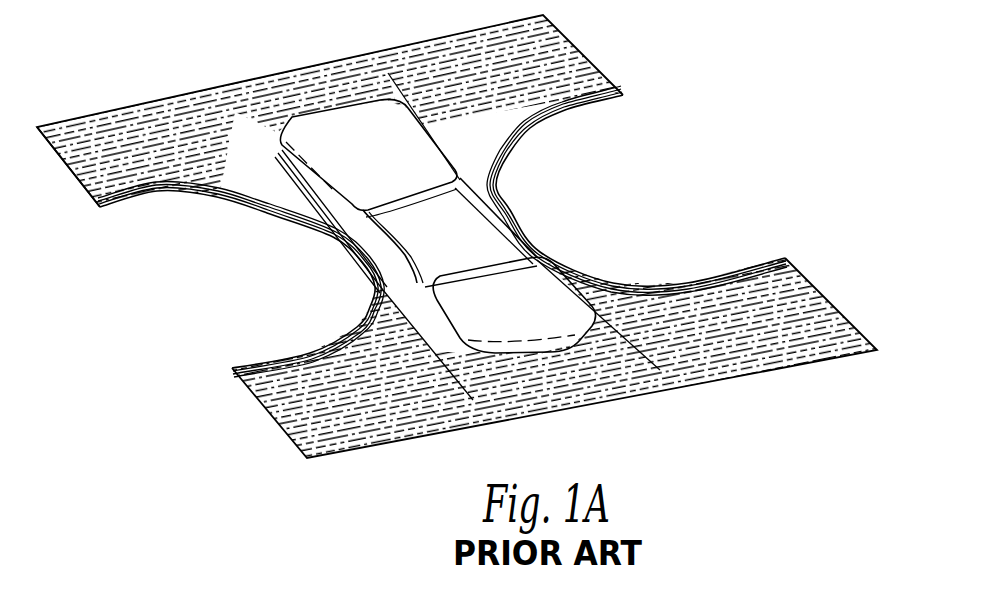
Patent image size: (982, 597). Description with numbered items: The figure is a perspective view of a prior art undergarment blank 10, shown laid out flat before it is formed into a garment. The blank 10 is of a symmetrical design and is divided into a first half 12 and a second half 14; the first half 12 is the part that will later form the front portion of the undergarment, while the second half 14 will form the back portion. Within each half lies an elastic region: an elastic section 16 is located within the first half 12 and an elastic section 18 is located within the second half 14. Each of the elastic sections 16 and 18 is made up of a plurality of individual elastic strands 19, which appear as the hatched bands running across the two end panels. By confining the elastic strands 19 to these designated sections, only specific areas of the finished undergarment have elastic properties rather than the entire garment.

The undergarment blank 10 is at (185, 440).
The first half 12 is at (300, 412).
The second half 14 is at (67, 170).
The elastic section 16 is at (367, 425).
The elastic section 18 is at (160, 98).
The elastic strands 19 is at (583, 67).